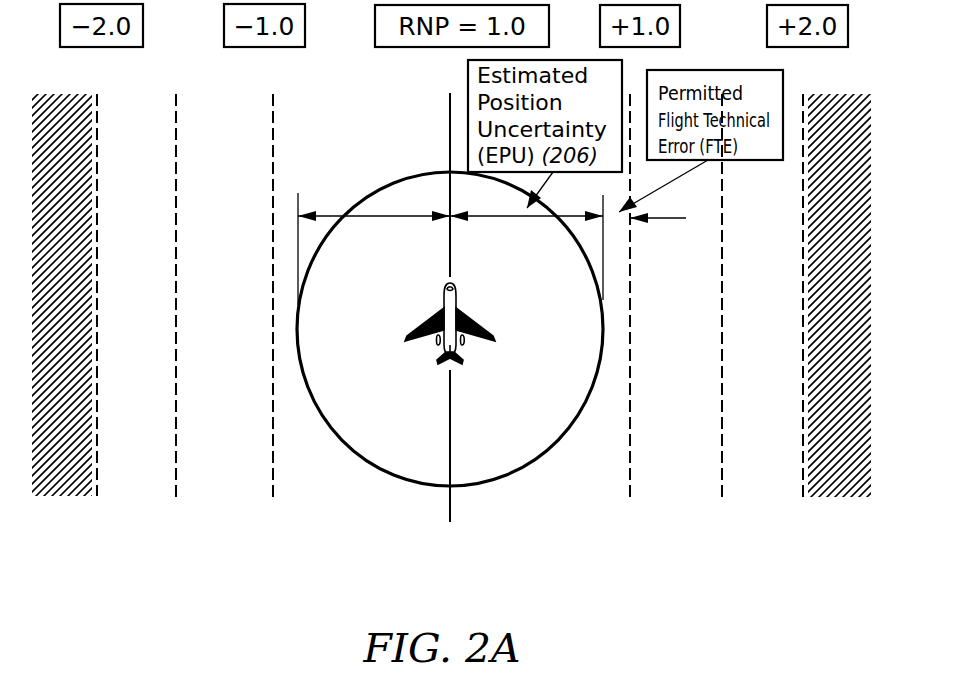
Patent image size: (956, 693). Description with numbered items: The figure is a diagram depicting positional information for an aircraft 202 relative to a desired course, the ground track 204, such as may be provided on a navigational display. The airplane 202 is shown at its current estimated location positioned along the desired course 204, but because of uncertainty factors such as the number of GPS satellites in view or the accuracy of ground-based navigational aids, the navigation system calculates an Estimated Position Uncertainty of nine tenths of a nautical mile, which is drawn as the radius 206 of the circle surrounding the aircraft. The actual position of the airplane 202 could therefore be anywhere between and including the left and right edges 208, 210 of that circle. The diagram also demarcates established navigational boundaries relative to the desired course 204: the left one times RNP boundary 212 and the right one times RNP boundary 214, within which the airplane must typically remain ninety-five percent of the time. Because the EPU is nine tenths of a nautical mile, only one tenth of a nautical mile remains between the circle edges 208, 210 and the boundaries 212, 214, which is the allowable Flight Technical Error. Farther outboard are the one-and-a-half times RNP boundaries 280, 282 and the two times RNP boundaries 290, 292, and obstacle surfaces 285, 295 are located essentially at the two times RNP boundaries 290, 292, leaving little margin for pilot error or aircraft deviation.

The aircraft 202 is at (440, 328).
The desired ground track 204 is at (449, 498).
The radius of the EPU circle 206 is at (354, 216).
The left edge of the circle 208 is at (298, 205).
The right edge of the circle 210 is at (603, 283).
The left 1.0* RNP boundary 212 is at (273, 255).
The right 1.0* RNP boundary 214 is at (630, 283).
The 1.5* RNP boundary 280 is at (176, 478).
The 1.5* RNP boundary 282 is at (722, 440).
The obstacle surface 285 is at (63, 476).
The 2.0* RNP boundary 290 is at (97, 473).
The 2.0* RNP boundary 292 is at (803, 488).
The obstacle surface 295 is at (835, 463).